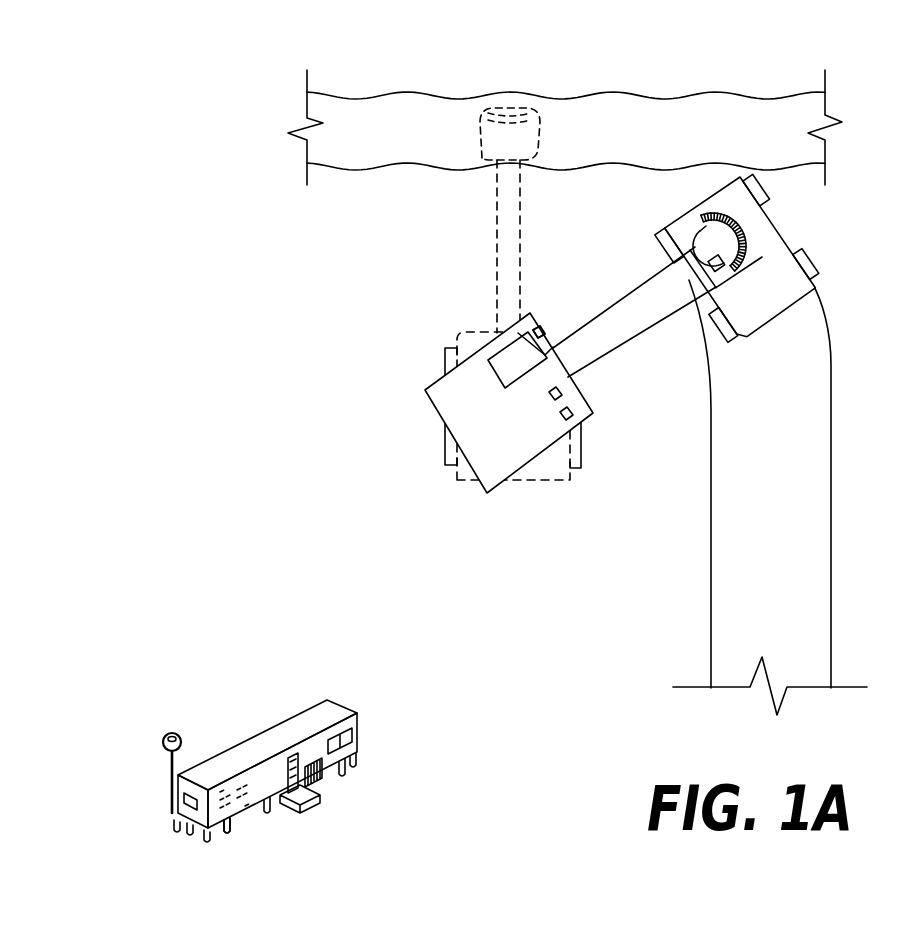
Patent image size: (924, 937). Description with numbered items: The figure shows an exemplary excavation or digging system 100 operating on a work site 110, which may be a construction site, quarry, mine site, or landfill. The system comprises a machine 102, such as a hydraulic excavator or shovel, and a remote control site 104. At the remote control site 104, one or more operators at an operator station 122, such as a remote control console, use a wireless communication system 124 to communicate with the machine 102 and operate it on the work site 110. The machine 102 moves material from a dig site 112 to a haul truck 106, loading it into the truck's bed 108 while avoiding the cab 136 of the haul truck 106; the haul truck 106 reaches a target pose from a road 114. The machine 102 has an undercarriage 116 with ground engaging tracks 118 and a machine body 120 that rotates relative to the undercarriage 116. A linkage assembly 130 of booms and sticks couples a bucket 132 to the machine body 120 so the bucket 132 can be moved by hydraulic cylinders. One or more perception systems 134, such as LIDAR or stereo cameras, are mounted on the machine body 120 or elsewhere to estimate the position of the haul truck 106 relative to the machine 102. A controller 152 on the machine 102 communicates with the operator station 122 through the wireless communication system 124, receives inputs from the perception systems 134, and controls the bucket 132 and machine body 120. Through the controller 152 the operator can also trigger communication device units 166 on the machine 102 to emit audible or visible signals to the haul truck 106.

The digging system 100 is at (118, 282).
The machine 102 is at (379, 410).
The remote control site 104 is at (252, 747).
The haul truck 106 is at (795, 229).
The bed 108 is at (757, 230).
The work site 110 is at (262, 76).
The dig site 112 is at (637, 109).
The road 114 is at (805, 468).
The undercarriage 116 is at (416, 344).
The tracks 118 is at (445, 467).
The machine body 120 is at (440, 420).
The operator station 122 is at (238, 815).
The wireless communication system 124 is at (161, 712).
The linkage assembly 130 is at (611, 310).
The bucket 132 is at (704, 241).
The perception system 134 is at (538, 334).
The cab 136 is at (792, 298).
The controller 152 is at (564, 422).
The communication device unit 166 is at (560, 390).